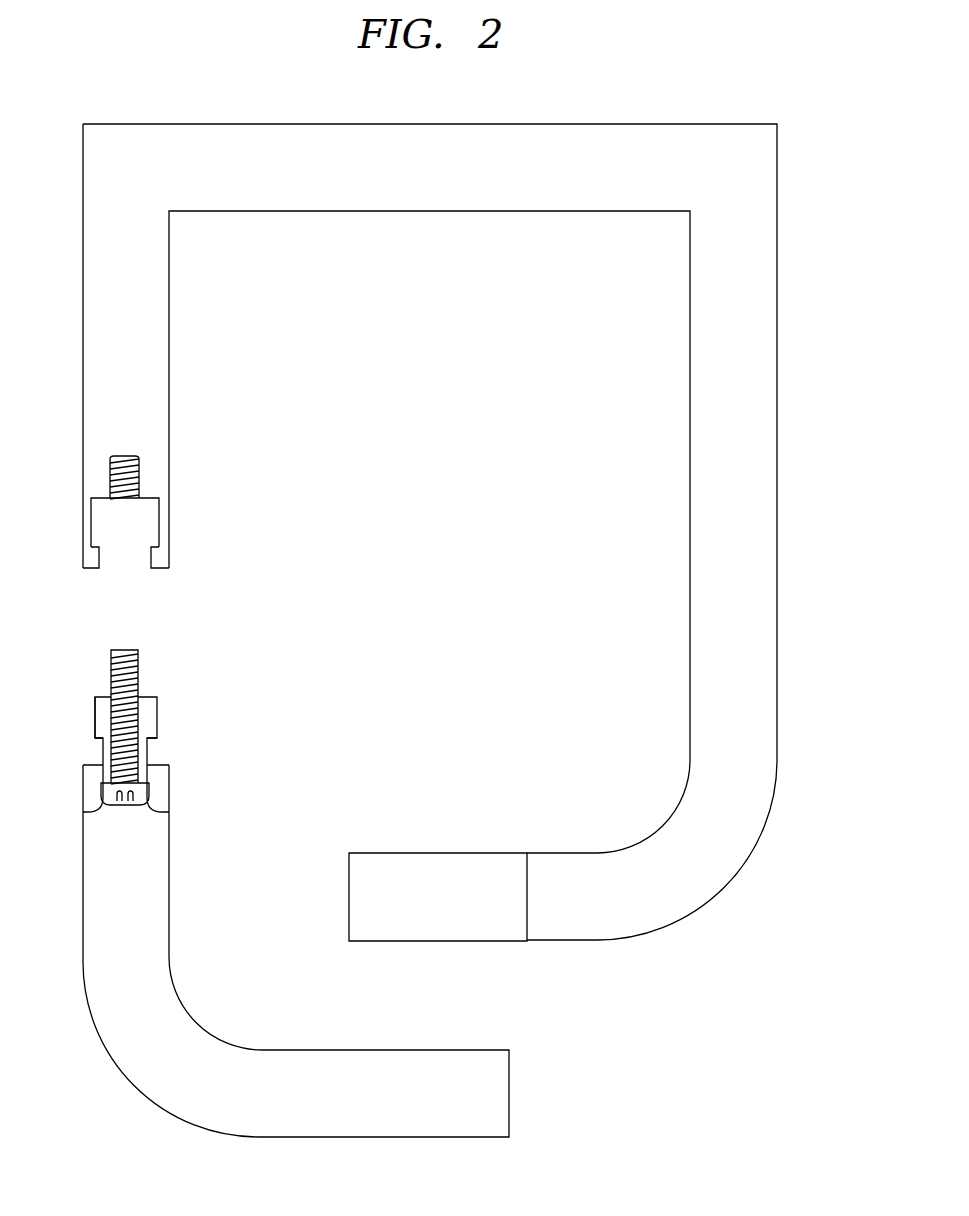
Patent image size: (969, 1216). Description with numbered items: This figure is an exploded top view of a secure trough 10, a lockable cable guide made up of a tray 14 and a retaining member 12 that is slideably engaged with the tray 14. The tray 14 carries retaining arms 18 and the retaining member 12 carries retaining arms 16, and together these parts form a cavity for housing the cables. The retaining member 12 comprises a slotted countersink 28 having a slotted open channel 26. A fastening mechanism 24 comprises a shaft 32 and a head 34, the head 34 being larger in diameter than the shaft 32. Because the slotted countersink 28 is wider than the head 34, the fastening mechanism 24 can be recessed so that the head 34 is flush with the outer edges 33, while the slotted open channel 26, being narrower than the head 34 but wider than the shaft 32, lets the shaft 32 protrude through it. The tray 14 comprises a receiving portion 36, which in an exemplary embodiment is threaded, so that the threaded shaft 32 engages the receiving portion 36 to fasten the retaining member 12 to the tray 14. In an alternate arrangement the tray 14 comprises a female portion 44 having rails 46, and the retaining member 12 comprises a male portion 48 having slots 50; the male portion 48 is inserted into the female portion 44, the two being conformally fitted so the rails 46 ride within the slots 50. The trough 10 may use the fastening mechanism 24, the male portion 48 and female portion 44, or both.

The secure trough 10 is at (797, 170).
The retaining member 12 is at (117, 1057).
The tray 14 is at (778, 603).
The retaining arms 16 is at (411, 1049).
The retaining arms 18 is at (439, 853).
The fastening mechanism 24 is at (161, 657).
The slotted open channel 26 is at (157, 723).
The slotted countersink 28 is at (150, 793).
The shaft 32 is at (125, 650).
The outer edges 33 is at (84, 812).
The head 34 is at (125, 807).
The receiving portion 36 is at (140, 480).
The female portion 44 is at (182, 511).
The rails 46 is at (90, 557).
The male portion 48 is at (78, 715).
The slots 50 is at (100, 749).